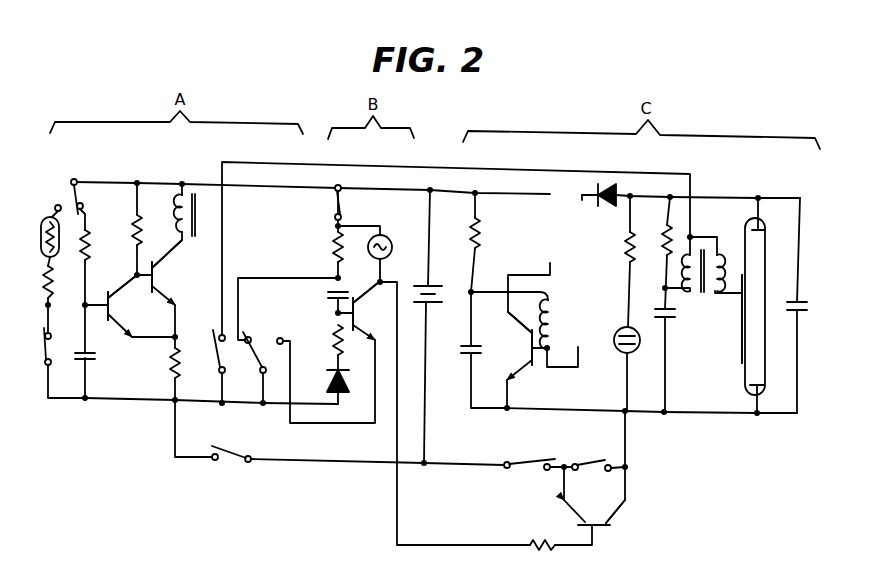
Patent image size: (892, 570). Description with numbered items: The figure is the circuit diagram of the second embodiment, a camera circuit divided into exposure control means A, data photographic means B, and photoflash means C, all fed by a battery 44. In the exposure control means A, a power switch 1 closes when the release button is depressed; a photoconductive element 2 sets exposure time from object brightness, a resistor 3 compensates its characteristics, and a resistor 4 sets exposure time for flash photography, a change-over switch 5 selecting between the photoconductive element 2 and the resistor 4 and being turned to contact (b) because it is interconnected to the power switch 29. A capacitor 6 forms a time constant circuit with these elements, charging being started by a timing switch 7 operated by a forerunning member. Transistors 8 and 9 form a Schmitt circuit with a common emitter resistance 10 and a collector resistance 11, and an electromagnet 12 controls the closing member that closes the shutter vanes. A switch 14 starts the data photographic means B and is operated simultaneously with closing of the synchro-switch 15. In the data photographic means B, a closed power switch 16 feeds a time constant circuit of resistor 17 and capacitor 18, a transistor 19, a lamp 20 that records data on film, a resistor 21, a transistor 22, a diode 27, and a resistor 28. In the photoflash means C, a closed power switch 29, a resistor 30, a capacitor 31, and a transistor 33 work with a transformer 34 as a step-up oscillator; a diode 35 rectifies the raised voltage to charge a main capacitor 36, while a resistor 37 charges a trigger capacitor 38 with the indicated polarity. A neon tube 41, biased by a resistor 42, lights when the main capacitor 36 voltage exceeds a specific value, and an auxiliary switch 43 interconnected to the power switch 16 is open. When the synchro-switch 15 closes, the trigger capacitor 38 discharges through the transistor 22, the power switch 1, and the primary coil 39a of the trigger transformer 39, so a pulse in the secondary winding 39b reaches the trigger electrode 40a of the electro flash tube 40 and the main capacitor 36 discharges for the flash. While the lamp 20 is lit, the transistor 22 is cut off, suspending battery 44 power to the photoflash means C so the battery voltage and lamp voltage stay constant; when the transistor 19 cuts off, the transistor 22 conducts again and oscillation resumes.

The power switch 1 is at (230, 460).
The photoconductive element 2 is at (41, 228).
The resistor 3 is at (45, 288).
The resistor 4 is at (91, 243).
The change-over switch 5 is at (70, 180).
The capacitor 6 is at (95, 357).
The timing switch 7 is at (43, 348).
The transistor 8 is at (112, 310).
The transistor 9 is at (158, 284).
The emitter resistance 10 is at (171, 368).
The collector resistance 11 is at (150, 226).
The electromagnet 12 is at (198, 230).
The switch 14 is at (249, 332).
The synchro-switch 15 is at (212, 330).
The power switch 16 is at (343, 209).
The resistor 17 is at (333, 248).
The capacitor 18 is at (328, 296).
The transistor 19 is at (358, 316).
The lamp 20 is at (397, 234).
The resistor 21 is at (531, 542).
The transistor 22 is at (586, 500).
The diode 27 is at (344, 388).
The resistor 28 is at (344, 340).
The power switch 29 is at (510, 462).
The resistor 30 is at (482, 238).
The capacitor 31 is at (461, 355).
The transistor 33 is at (529, 348).
The transformer 34 is at (556, 367).
The diode 35 is at (604, 208).
The main capacitor 36 is at (808, 312).
The resistor 37 is at (668, 244).
The trigger capacitor 38 is at (663, 330).
The trigger transformer 39 is at (702, 279).
The primary coil 39a is at (690, 292).
The secondary winding 39b is at (722, 295).
The electro flash tube 40 is at (747, 306).
The trigger electrode 40a is at (741, 358).
The neon tube 41 is at (616, 348).
The resistor 42 is at (630, 264).
The auxiliary switch 43 is at (578, 464).
The battery 44 is at (443, 292).